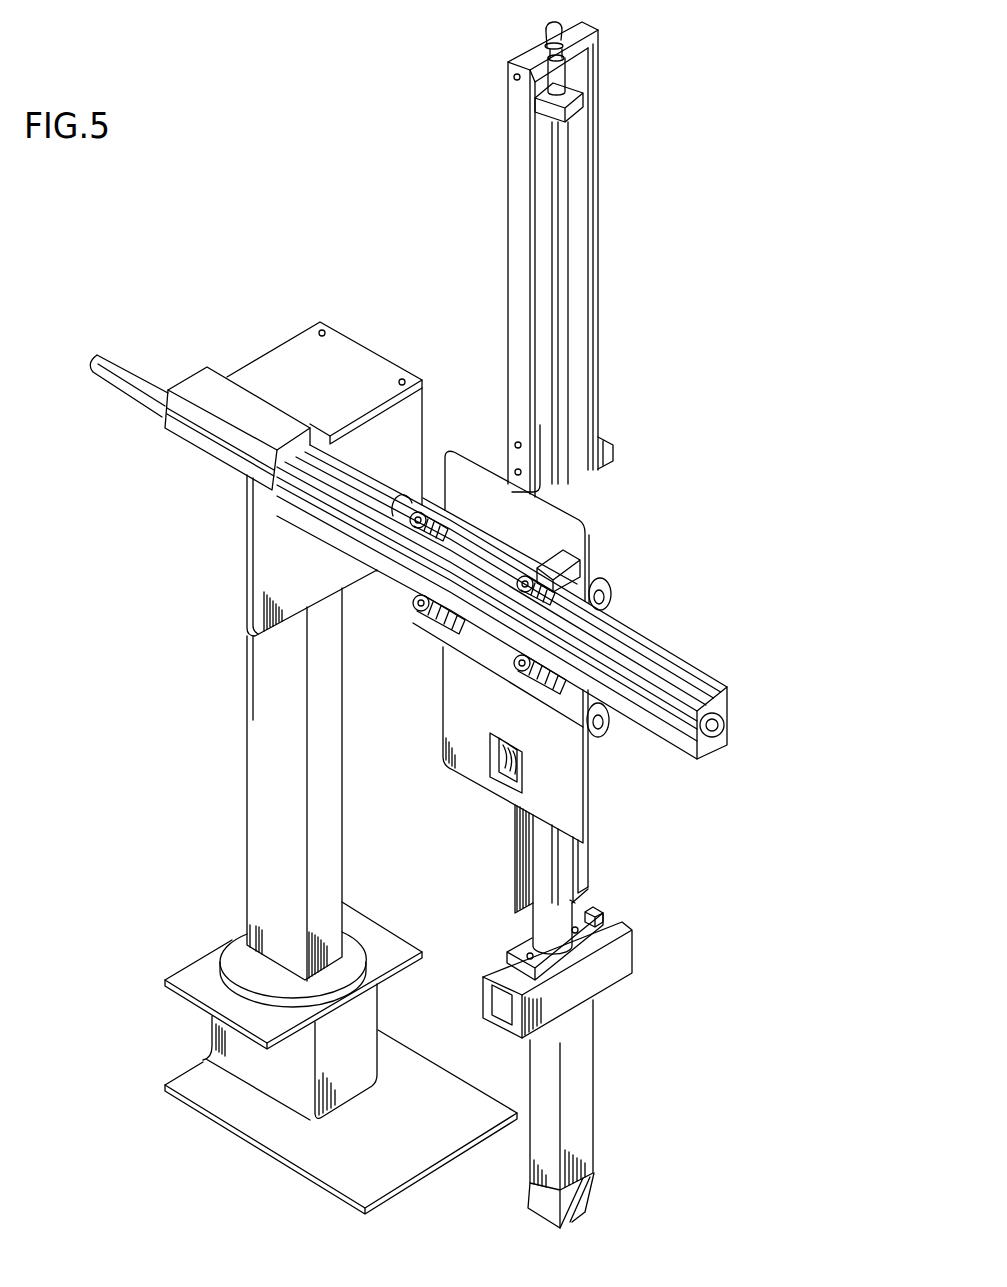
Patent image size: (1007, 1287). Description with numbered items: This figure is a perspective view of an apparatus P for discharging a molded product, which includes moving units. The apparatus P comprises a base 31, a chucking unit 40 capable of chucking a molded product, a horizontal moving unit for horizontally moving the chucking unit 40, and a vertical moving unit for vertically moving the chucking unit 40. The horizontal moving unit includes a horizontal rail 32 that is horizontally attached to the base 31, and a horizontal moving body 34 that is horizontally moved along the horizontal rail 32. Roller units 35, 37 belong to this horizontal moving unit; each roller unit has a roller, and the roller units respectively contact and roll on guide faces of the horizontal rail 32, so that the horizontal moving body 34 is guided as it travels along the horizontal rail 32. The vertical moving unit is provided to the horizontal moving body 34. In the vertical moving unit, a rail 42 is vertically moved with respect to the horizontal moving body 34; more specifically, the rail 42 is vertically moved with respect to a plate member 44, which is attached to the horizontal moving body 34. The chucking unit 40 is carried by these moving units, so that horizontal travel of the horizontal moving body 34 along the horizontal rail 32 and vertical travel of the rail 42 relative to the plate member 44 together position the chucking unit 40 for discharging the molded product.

The apparatus for discharging a molded product P is at (257, 122).
The base 31 is at (277, 771).
The horizontal rail 32 is at (655, 665).
The horizontal moving body 34 is at (481, 650).
The roller unit 35 is at (396, 518).
The roller unit 37 is at (404, 614).
The chucking unit 40 is at (647, 1178).
The rail 42 is at (573, 248).
The plate member 44 is at (557, 533).